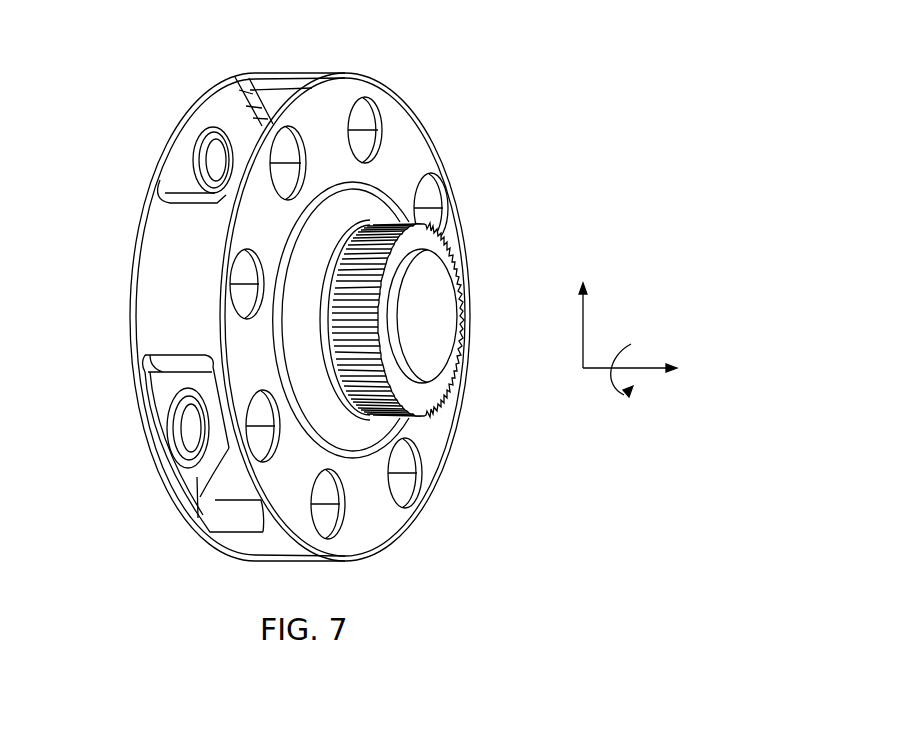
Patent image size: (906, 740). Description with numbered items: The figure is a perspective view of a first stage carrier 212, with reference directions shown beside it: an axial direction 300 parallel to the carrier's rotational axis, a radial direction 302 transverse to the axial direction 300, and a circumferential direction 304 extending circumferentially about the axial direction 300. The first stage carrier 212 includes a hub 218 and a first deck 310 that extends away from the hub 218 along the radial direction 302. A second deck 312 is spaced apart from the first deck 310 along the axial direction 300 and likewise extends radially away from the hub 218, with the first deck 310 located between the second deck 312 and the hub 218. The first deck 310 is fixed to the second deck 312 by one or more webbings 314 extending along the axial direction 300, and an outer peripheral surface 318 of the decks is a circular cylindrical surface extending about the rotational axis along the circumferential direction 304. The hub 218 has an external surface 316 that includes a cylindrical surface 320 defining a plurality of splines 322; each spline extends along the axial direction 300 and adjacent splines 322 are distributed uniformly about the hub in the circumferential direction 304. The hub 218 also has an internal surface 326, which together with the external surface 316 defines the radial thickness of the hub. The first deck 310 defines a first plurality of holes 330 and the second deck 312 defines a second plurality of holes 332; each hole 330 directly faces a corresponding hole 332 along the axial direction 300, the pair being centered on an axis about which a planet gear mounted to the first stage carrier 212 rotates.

The first stage carrier 212 is at (512, 34).
The hub 218 is at (484, 398).
The axial direction 300 is at (651, 369).
The radial direction 302 is at (585, 311).
The circumferential direction 304 is at (627, 338).
The first deck 310 is at (370, 515).
The second deck 312 is at (202, 492).
The webbings 314 is at (148, 280).
The external surface 316 is at (366, 207).
The outer peripheral surface 318 is at (182, 125).
The cylindrical surface 320 is at (420, 434).
The splines 322 is at (421, 320).
The internal surface 326 is at (436, 265).
The first plurality of holes 330 is at (308, 143).
The second plurality of holes 332 is at (205, 174).